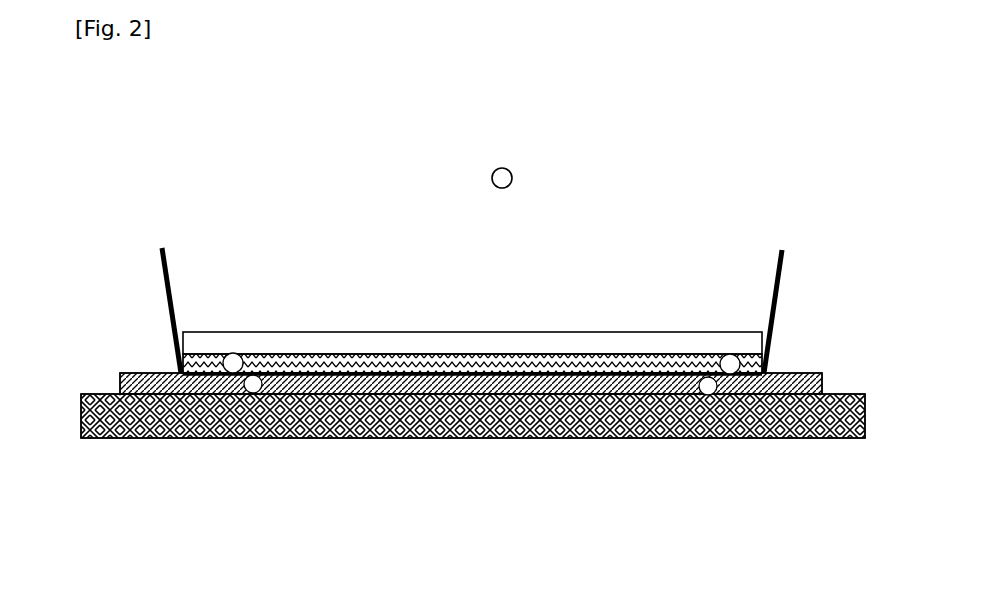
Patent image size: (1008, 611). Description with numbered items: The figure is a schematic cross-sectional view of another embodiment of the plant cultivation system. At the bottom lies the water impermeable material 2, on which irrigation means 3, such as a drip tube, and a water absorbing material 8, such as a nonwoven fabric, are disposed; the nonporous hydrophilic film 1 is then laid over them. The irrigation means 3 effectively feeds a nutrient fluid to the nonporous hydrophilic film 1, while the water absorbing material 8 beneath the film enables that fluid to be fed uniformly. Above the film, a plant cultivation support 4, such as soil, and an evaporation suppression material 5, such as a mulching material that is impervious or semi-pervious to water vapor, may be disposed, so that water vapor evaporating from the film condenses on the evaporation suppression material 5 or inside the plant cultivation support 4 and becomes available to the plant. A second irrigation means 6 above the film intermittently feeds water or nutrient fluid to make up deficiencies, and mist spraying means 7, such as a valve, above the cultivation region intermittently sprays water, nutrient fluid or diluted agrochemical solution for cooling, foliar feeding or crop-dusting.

The nonporous hydrophilic film 1 is at (190, 281).
The water impermeable material 2 is at (379, 420).
The irrigation means 3 is at (236, 403).
The plant cultivation support 4 is at (689, 345).
The evaporation suppression material 5 is at (607, 321).
The irrigation means 6 is at (255, 343).
The mist spraying means 7 is at (527, 168).
The water absorbing material 8 is at (150, 363).